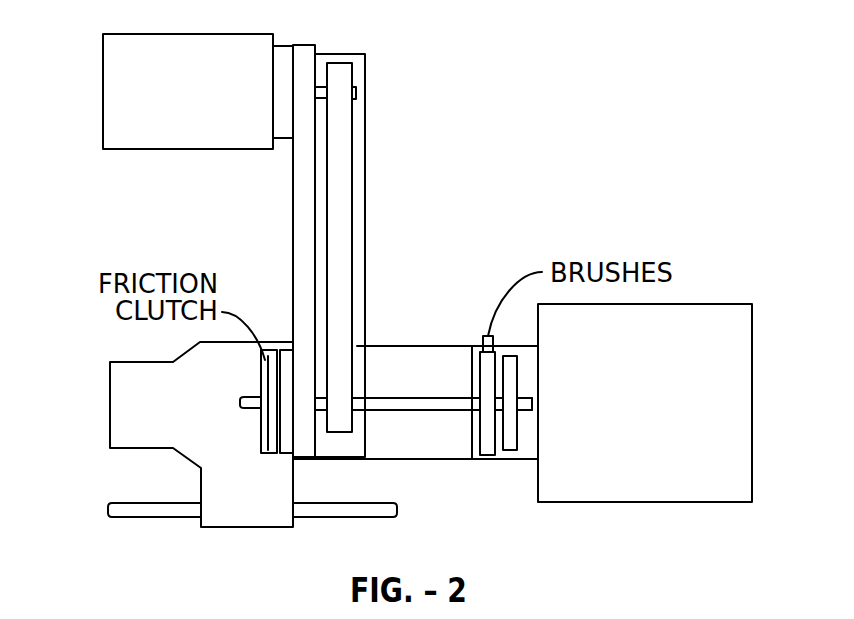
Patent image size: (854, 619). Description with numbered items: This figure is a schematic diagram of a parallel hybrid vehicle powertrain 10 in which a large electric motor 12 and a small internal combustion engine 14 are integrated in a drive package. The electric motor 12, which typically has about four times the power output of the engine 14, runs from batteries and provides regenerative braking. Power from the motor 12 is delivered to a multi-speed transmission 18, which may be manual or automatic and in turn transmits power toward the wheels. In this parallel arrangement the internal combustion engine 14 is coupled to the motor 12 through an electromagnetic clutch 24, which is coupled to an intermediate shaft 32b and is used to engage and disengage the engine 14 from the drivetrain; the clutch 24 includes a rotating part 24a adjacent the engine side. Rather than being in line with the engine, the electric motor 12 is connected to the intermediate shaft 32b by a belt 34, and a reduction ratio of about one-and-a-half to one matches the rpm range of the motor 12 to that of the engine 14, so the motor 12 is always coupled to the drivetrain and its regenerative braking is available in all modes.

The hybrid powertrain configuration 10 is at (582, 105).
The electric motor 12 is at (103, 77).
The internal combustion engine 14 is at (638, 502).
The multi-speed transmission 18 is at (132, 448).
The electromagnetic clutch 24 is at (482, 358).
The generator rotor shaft 24a is at (532, 410).
The intermediate shaft 32b is at (392, 410).
The belt 34 is at (342, 68).